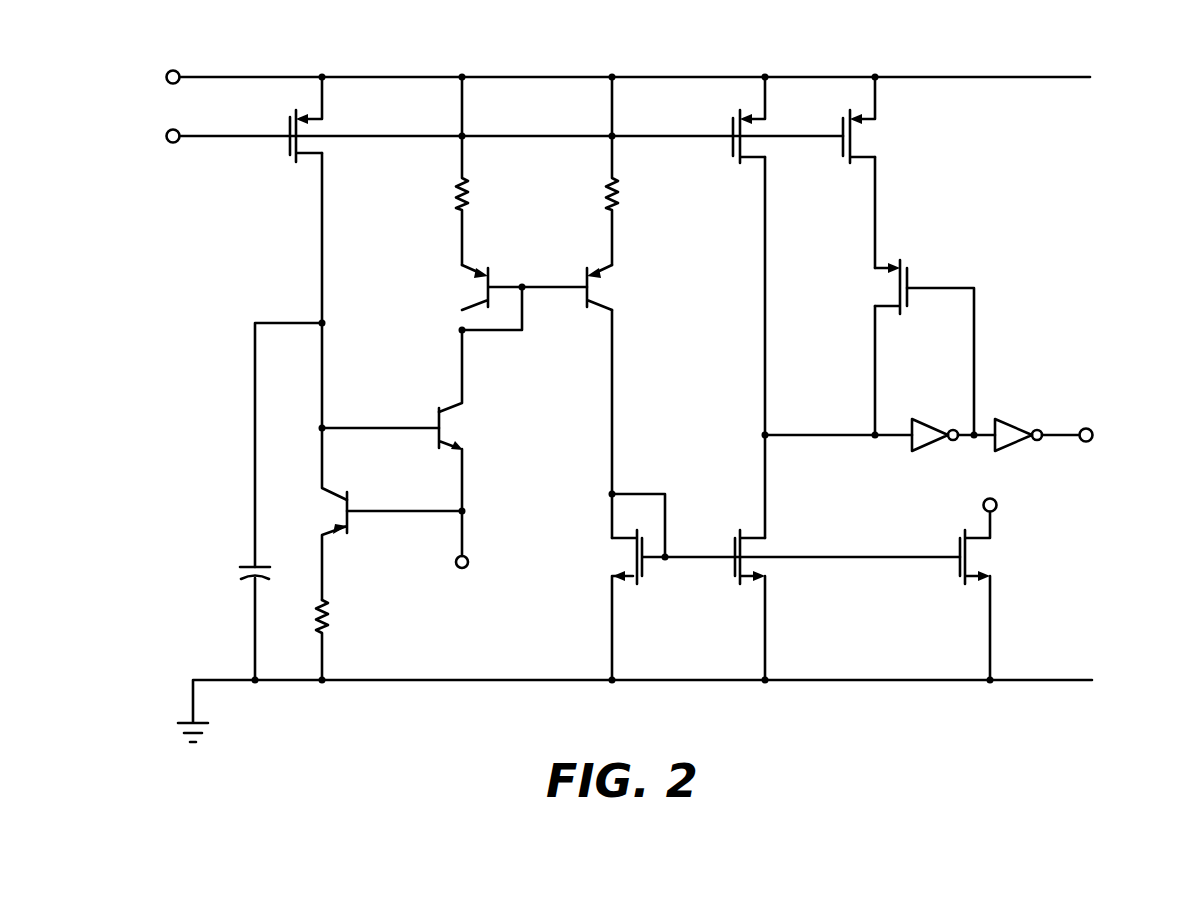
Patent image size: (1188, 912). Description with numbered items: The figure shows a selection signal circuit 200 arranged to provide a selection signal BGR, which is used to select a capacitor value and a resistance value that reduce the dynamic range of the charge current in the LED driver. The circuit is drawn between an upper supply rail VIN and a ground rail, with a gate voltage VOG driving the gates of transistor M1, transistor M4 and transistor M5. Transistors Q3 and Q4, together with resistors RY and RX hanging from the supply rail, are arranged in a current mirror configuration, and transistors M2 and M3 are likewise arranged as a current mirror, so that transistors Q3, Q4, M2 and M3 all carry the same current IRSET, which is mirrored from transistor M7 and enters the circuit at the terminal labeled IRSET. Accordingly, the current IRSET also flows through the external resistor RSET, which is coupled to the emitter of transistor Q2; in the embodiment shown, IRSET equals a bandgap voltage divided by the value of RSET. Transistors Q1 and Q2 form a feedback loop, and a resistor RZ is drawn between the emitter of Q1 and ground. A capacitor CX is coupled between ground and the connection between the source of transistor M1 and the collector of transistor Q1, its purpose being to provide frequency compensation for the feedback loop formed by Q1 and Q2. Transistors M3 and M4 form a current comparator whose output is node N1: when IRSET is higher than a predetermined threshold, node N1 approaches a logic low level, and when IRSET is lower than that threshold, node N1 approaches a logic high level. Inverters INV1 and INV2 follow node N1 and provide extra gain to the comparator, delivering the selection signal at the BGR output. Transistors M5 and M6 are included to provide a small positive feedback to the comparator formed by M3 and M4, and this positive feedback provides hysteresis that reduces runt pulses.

The selection signal circuit 200 is at (1113, 50).
The input voltage supply VIN is at (627, 60).
The output gate voltage VOG is at (504, 119).
The transistor M1 is at (324, 119).
The transistor M2 is at (767, 605).
The transistor M3 is at (774, 605).
The transistor M4 is at (773, 127).
The transistor M5 is at (878, 120).
The transistor M6 is at (871, 287).
The transistor M7 is at (995, 596).
The transistor Q1 is at (318, 546).
The transistor Q2 is at (464, 459).
The transistor Q3 is at (509, 288).
The transistor Q4 is at (614, 288).
The resistor RX is at (630, 171).
The resistor RY is at (480, 171).
The resistor RZ is at (340, 640).
The external resistor RSET is at (473, 582).
The capacitor CX is at (238, 575).
The node N1 is at (765, 435).
The inverter INV1 is at (953, 418).
The inverter INV2 is at (1036, 418).
The selection signal BGR is at (1097, 424).
The current IRSET is at (1012, 487).